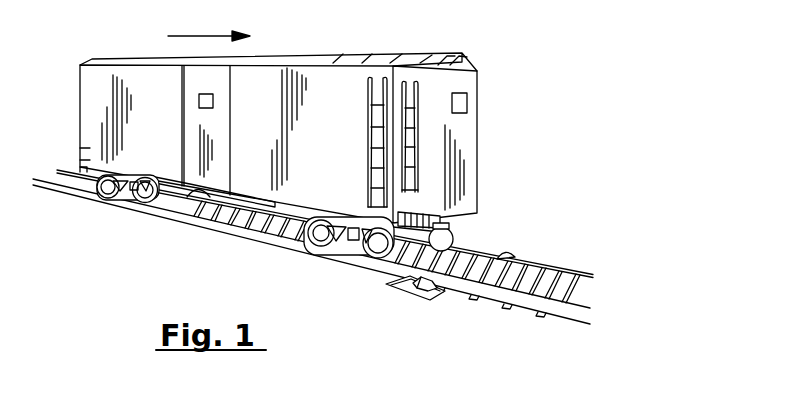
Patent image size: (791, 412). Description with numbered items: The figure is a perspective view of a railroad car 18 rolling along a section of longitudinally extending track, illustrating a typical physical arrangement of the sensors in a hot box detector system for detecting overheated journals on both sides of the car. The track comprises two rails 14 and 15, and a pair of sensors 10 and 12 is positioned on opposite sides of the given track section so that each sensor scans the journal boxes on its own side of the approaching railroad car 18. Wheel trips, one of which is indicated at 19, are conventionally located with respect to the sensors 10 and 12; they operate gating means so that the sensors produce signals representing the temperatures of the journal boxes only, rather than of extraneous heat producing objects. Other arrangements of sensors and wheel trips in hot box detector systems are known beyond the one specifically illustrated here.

The sensor 10 is at (414, 284).
The sensor 12 is at (510, 252).
The rail 14 is at (502, 292).
The rail 15 is at (540, 268).
The railroad car 18 is at (274, 72).
The wheel trip 19 is at (446, 252).